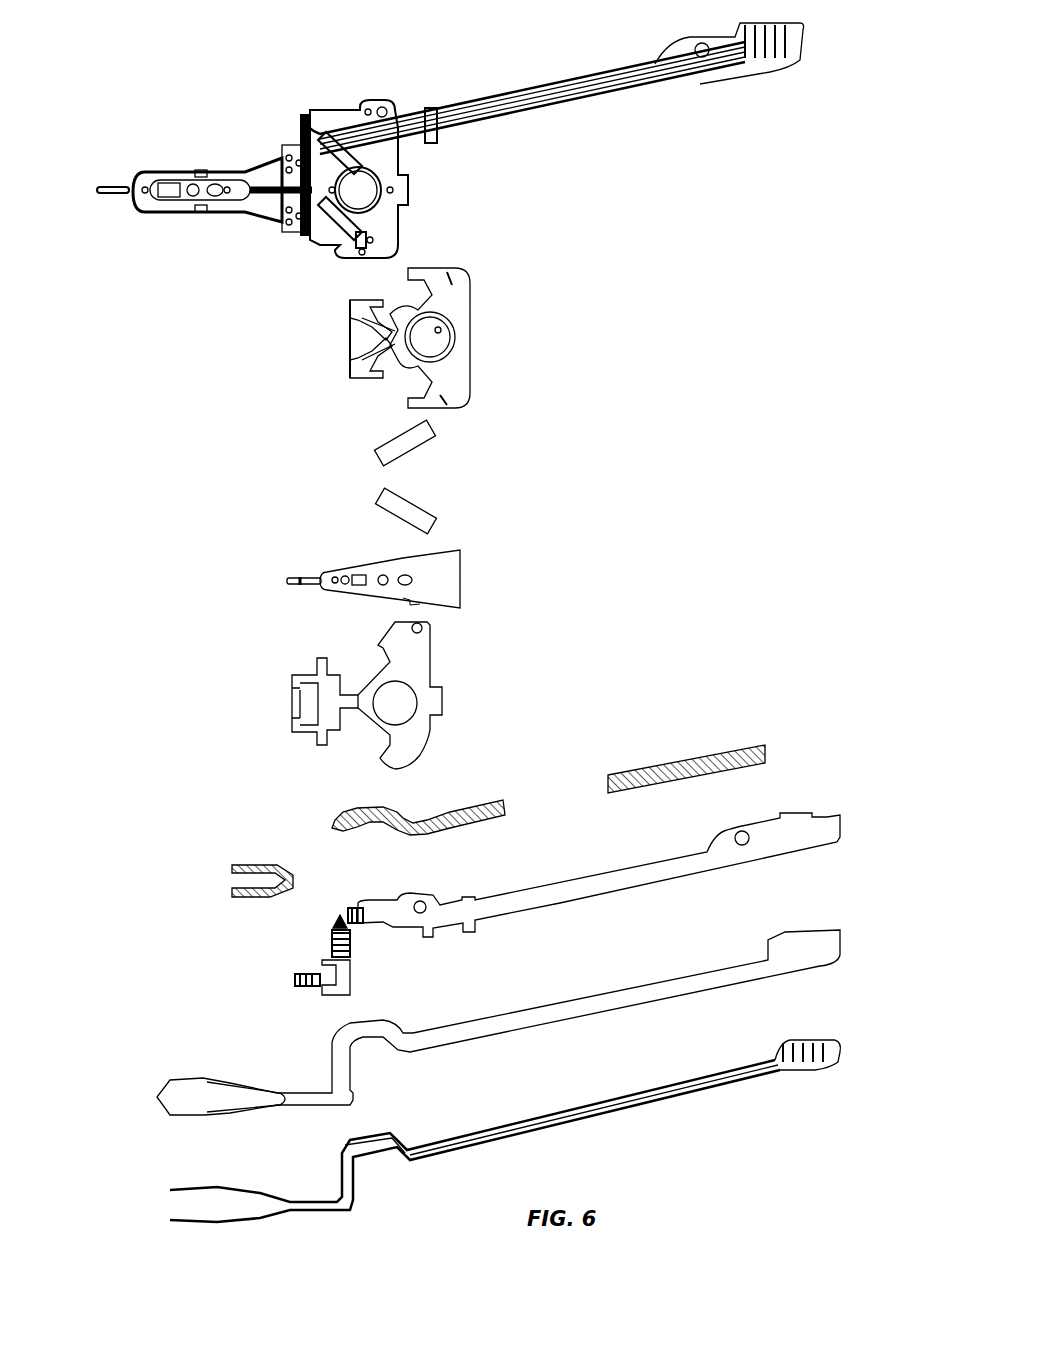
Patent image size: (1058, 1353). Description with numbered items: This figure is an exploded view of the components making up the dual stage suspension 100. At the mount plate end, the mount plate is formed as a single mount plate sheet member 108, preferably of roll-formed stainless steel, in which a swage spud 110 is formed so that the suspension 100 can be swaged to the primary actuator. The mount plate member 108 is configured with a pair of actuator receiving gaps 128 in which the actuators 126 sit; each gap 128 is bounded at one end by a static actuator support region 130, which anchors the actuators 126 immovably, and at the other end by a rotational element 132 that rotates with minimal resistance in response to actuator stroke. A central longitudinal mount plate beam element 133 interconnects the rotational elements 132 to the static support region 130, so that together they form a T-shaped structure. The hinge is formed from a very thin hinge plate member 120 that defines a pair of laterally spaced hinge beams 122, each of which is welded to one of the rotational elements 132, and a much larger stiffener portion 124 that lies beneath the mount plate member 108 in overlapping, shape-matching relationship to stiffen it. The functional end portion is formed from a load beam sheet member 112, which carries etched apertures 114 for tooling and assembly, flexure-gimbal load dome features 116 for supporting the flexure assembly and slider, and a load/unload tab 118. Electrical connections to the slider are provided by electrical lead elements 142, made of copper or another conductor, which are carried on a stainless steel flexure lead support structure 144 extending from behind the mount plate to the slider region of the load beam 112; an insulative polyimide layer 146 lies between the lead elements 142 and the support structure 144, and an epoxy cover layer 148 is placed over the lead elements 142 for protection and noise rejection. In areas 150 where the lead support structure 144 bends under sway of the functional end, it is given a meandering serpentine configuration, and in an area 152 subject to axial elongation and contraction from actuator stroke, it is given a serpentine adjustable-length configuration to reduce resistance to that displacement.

The suspension 100 is at (82, 1240).
The mount plate sheet member 108 is at (523, 277).
The swage spud 110 is at (450, 332).
The load beam sheet member 112 is at (450, 570).
The etched apertures 114 is at (403, 575).
The flexure-gimbal features (load dome) 116 is at (358, 595).
The load/unload tab 118 is at (298, 578).
The hinge plate member 120 is at (450, 648).
The hinge beams 122 is at (290, 717).
The stiffener portion 124 is at (427, 733).
The actuators 126 is at (398, 495).
The actuator receiving gaps 128 is at (403, 297).
The static actuator support region 130 is at (457, 382).
The rotational elements 132 is at (358, 307).
The central longitudinal mount plate beam element 133 is at (377, 335).
The electrical lead elements 142 is at (683, 1098).
The flexure lead support structure 144 is at (680, 872).
The insulative layer 146 is at (682, 985).
The cover layer 148 is at (638, 783).
The areas subject to bending 150 is at (447, 275).
The area subject to axial elongation and contraction 152 is at (348, 912).